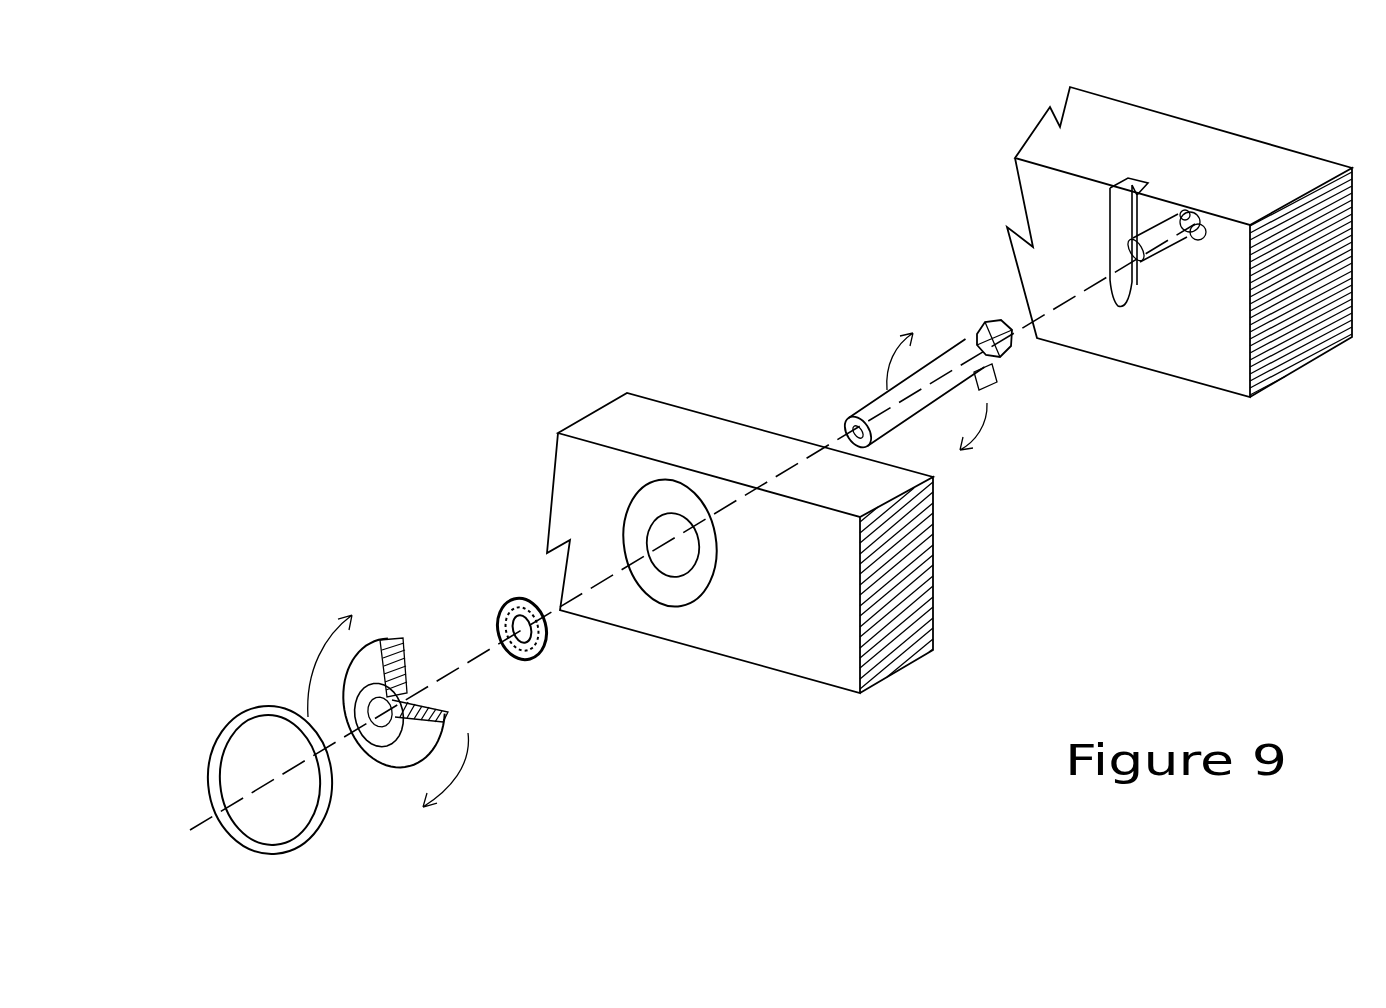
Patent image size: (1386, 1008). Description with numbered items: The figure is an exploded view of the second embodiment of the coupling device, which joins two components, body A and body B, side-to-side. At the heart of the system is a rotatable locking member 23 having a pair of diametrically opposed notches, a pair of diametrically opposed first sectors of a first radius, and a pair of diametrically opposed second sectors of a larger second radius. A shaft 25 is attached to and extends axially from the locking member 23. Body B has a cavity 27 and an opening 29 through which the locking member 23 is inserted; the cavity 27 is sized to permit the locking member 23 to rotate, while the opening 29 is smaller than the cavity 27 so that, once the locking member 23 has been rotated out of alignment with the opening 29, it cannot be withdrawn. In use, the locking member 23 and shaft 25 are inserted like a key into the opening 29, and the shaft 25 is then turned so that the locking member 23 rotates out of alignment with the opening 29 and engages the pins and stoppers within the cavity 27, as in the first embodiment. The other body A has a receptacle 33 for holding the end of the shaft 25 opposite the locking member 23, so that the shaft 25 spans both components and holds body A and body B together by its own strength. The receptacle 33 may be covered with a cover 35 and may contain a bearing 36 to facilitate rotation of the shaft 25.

The rotatable locking member 23 is at (973, 335).
The shaft 25 is at (867, 407).
The cavity 27 is at (1200, 257).
The opening 29 is at (1117, 267).
The receptacle 33 is at (405, 638).
The cover 35 is at (250, 708).
The bearing 36 is at (535, 660).
The body A' A is at (632, 430).
The body B' B is at (1203, 323).